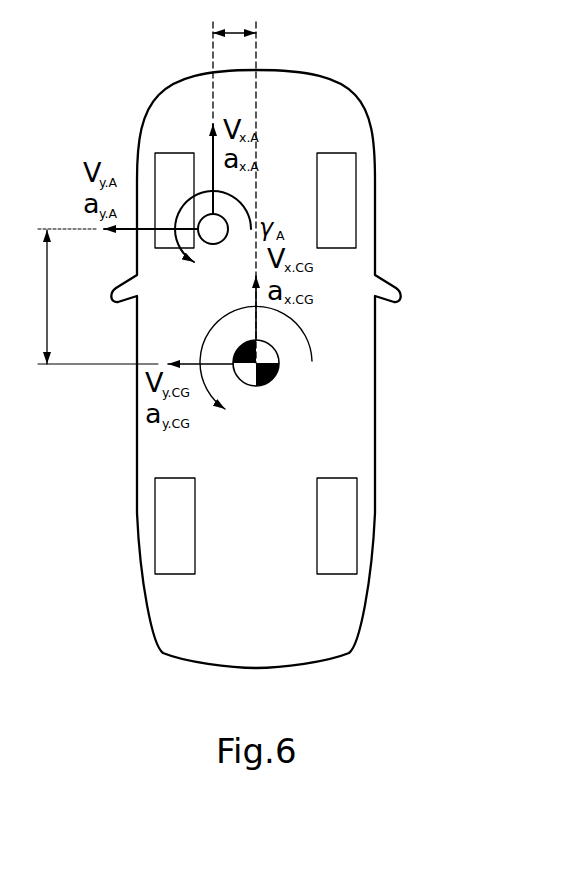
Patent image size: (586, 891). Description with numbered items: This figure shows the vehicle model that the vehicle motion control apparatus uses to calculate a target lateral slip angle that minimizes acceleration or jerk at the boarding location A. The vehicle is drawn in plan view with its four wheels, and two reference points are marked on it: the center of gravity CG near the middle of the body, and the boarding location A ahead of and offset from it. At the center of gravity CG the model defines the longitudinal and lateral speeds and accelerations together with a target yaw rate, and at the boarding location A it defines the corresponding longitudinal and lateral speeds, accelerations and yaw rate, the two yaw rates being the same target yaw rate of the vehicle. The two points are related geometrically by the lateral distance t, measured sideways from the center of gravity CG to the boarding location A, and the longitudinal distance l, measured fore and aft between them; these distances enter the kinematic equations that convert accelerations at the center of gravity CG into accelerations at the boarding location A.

The boarding location A is at (177, 193).
The center of gravity CG is at (249, 342).
The lateral distance t is at (234, 18).
The longitudinal distance l is at (94, 296).